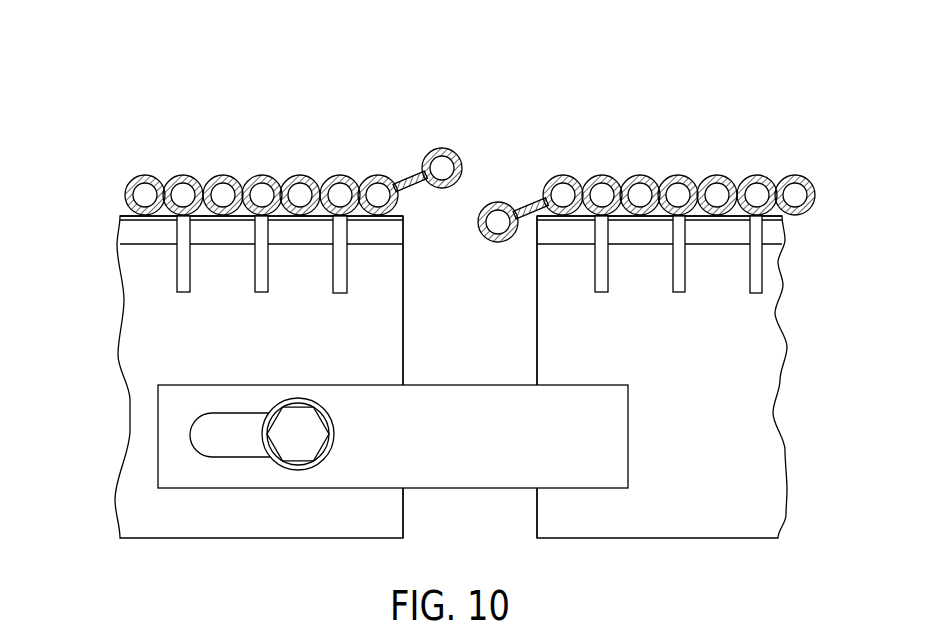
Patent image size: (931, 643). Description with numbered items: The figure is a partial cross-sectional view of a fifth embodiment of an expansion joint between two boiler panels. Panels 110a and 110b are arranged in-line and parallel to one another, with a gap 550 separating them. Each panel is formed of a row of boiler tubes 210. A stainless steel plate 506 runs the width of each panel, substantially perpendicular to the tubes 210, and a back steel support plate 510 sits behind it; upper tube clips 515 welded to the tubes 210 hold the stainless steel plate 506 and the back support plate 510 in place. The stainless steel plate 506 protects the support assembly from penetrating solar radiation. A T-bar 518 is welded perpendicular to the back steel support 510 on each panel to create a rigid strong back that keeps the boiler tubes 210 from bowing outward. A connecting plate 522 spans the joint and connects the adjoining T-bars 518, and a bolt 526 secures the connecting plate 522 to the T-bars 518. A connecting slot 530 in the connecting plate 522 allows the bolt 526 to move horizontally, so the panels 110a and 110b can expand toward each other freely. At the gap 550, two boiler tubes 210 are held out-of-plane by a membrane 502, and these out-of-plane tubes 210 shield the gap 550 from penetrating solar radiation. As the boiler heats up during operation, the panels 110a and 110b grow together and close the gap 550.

The panel 110a is at (240, 72).
The panel 110b is at (640, 72).
The boiler tubes 210 is at (183, 180).
The membrane 502 is at (406, 178).
The stainless steel plate 506 is at (402, 218).
The back steel support plate 510 is at (122, 232).
The upper tube clips 515 is at (186, 294).
The T-bar 518 is at (404, 305).
The connecting plate 522 is at (368, 476).
The bolt 526 is at (298, 462).
The connecting slot 530 is at (196, 418).
The gap 550 is at (472, 150).